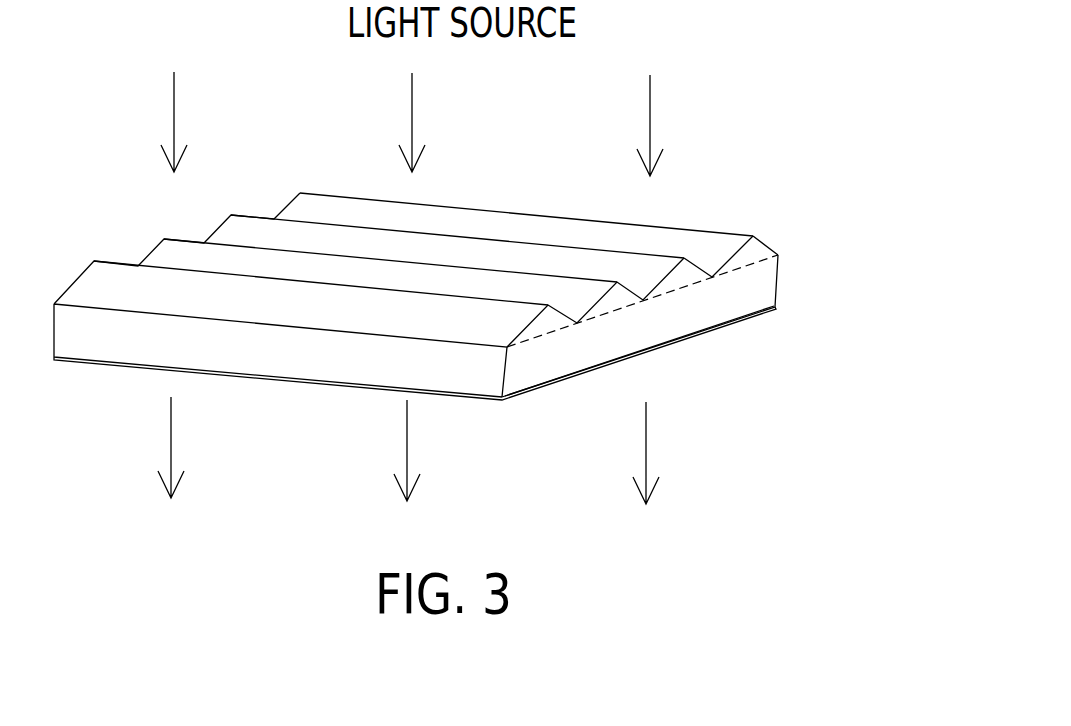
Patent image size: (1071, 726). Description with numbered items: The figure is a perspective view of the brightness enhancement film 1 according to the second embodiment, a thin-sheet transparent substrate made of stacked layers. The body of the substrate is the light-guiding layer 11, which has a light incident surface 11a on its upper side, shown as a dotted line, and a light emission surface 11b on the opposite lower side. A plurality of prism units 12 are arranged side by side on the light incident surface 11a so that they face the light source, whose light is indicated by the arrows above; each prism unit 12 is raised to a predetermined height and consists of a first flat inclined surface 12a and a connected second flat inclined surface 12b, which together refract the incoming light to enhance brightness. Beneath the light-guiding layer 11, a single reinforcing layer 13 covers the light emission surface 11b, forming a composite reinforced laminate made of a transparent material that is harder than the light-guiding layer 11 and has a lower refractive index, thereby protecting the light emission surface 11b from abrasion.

The brightness enhancement film 1 is at (298, 398).
The light-guiding layer 11 is at (767, 285).
The light incident surface 11a is at (672, 292).
The light emission surface 11b is at (748, 313).
The prism units 12 is at (838, 212).
The first flat inclined surface 12a is at (720, 242).
The second flat inclined surface 12b is at (763, 242).
The reinforcing layer 13 is at (727, 328).